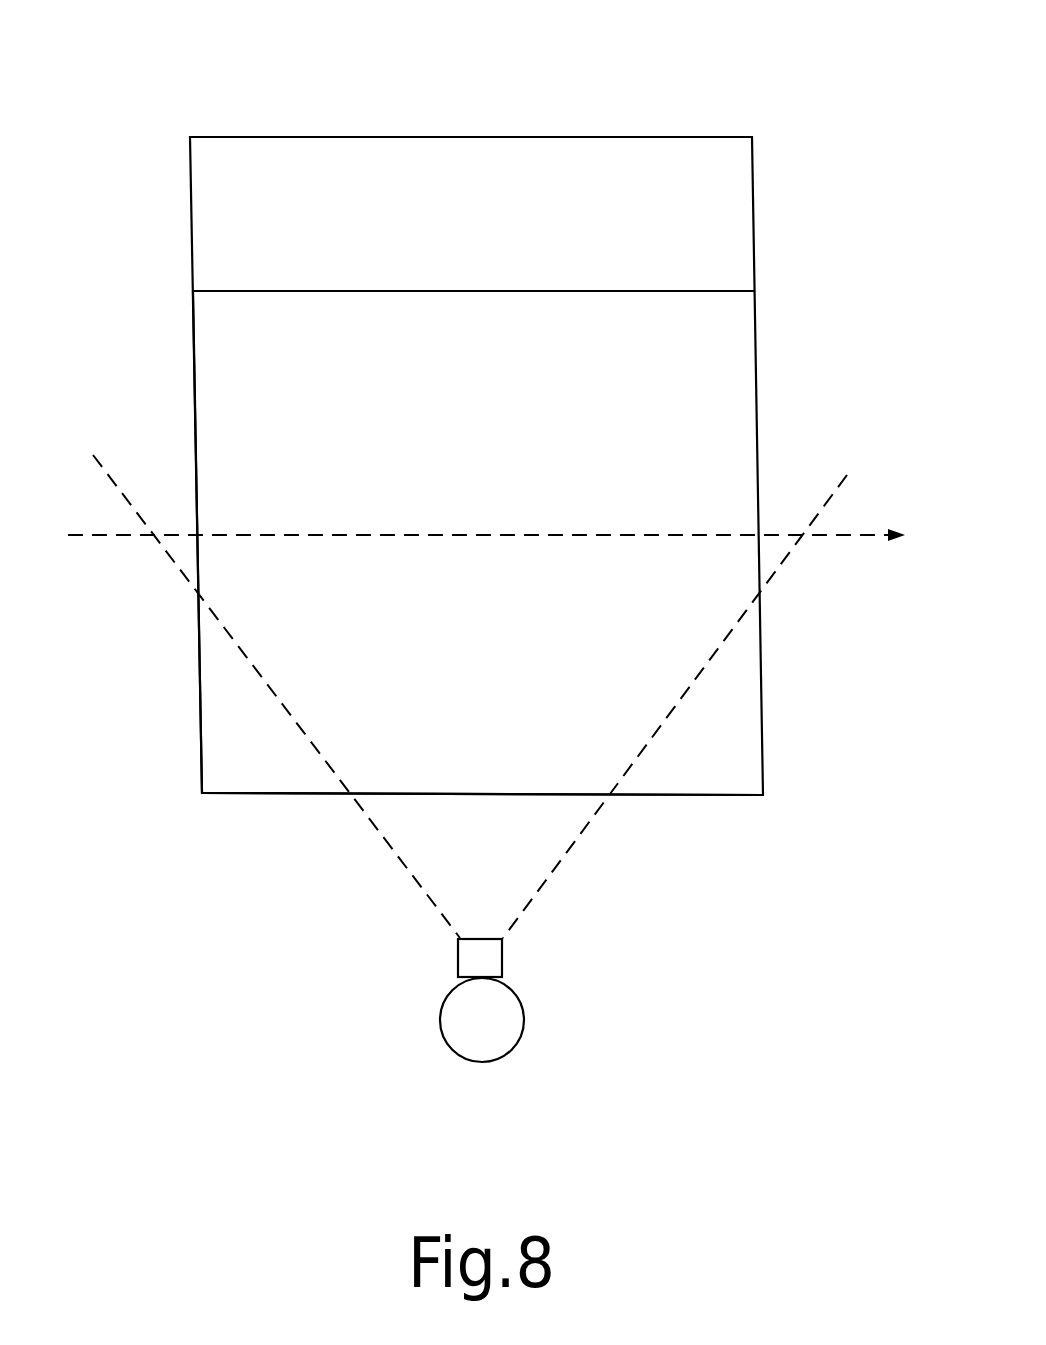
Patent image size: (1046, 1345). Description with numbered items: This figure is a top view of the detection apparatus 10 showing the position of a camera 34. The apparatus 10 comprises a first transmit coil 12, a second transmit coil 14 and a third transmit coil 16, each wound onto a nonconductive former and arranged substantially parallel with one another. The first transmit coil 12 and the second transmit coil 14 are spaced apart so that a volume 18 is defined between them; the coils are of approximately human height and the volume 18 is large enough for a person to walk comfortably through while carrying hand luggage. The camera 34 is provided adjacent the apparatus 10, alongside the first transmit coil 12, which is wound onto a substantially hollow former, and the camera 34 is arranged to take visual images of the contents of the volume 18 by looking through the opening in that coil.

The detection apparatus 10 is at (189, 125).
The first transmit coil 12 is at (742, 795).
The second transmit coil 14 is at (730, 291).
The third transmit coil 16 is at (682, 137).
The volume 18 is at (240, 443).
The camera 34 is at (524, 1010).